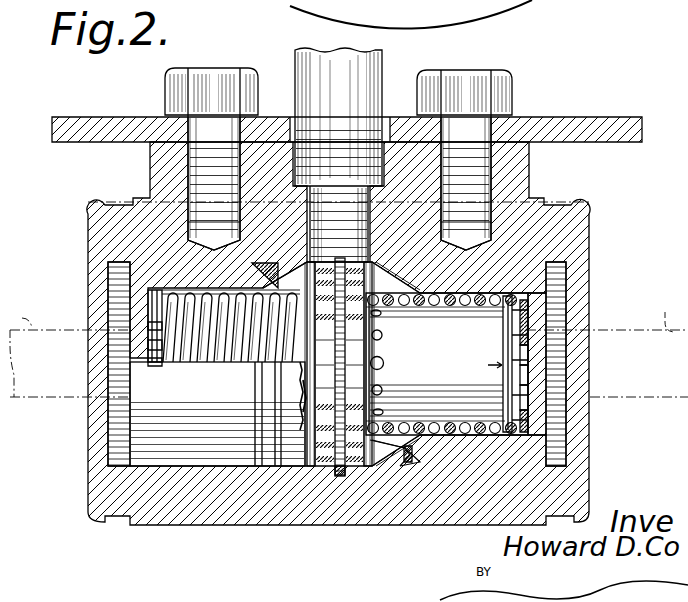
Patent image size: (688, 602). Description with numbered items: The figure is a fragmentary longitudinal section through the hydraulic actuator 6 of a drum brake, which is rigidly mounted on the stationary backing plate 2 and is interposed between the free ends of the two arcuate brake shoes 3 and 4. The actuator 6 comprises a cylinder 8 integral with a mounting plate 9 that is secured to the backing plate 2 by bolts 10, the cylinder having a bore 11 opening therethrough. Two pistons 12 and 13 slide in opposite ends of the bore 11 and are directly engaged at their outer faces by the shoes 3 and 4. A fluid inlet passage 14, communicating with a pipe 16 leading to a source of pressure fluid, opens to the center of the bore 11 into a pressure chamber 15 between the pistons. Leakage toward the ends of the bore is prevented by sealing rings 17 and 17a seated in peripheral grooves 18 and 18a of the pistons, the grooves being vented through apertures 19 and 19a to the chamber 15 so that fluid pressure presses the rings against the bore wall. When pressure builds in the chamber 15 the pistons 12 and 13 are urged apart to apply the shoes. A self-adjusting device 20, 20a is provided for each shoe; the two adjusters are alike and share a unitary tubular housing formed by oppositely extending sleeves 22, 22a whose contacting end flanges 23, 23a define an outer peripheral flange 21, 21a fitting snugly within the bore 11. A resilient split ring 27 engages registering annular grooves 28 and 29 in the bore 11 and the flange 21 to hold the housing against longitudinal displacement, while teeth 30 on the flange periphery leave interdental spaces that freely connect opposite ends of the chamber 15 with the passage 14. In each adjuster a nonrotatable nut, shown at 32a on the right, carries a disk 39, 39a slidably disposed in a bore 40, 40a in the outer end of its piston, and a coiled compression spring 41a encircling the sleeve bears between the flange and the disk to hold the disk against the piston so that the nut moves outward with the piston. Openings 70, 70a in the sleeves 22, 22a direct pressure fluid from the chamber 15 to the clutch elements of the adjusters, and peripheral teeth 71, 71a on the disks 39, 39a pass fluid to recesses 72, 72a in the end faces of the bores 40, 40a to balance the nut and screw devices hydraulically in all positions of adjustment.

The backing plate 2 is at (578, 120).
The brake shoe 3 is at (16, 313).
The brake shoe 4 is at (664, 303).
The hydraulic actuator 6 is at (172, 537).
The cylinder 8 is at (583, 218).
The mounting plate 9 is at (545, 175).
The bolts 10 is at (180, 84).
The bore 11 is at (570, 252).
The piston 12 is at (135, 413).
The piston 13 is at (530, 322).
The fluid inlet passage 14 is at (306, 228).
The pressure chamber 15 is at (306, 468).
The pipe 16 is at (362, 78).
The sealing ring 17 is at (272, 460).
The sealing ring 17a is at (418, 466).
The peripheral groove 18 is at (256, 460).
The peripheral groove 18a is at (373, 468).
The aperture 19 is at (256, 276).
The aperture 19a is at (408, 428).
The self-adjusting device 20 is at (148, 306).
The self-adjusting device 20a is at (530, 377).
The outer peripheral flange 21 is at (308, 430).
The outer peripheral flange 21a is at (395, 362).
The sleeve 22 is at (212, 346).
The sleeve 22a is at (447, 364).
The end flange 23 is at (324, 368).
The end flange 23a is at (316, 394).
The resilient split ring 27 is at (334, 266).
The annular groove 28 is at (339, 205).
The annular groove 29 is at (326, 468).
The teeth 30 is at (346, 476).
The outer screw member 32a is at (530, 362).
The disk 39 is at (150, 345).
The disk 39a is at (522, 342).
The bore 40 is at (148, 295).
The bore 40a is at (566, 280).
The coiled compression spring 41a is at (463, 305).
The opening 70 is at (262, 372).
The opening 70a is at (382, 335).
The peripheral teeth 71 is at (148, 328).
The peripheral teeth 71a is at (545, 412).
The recess 72 is at (148, 378).
The recess 72a is at (540, 392).